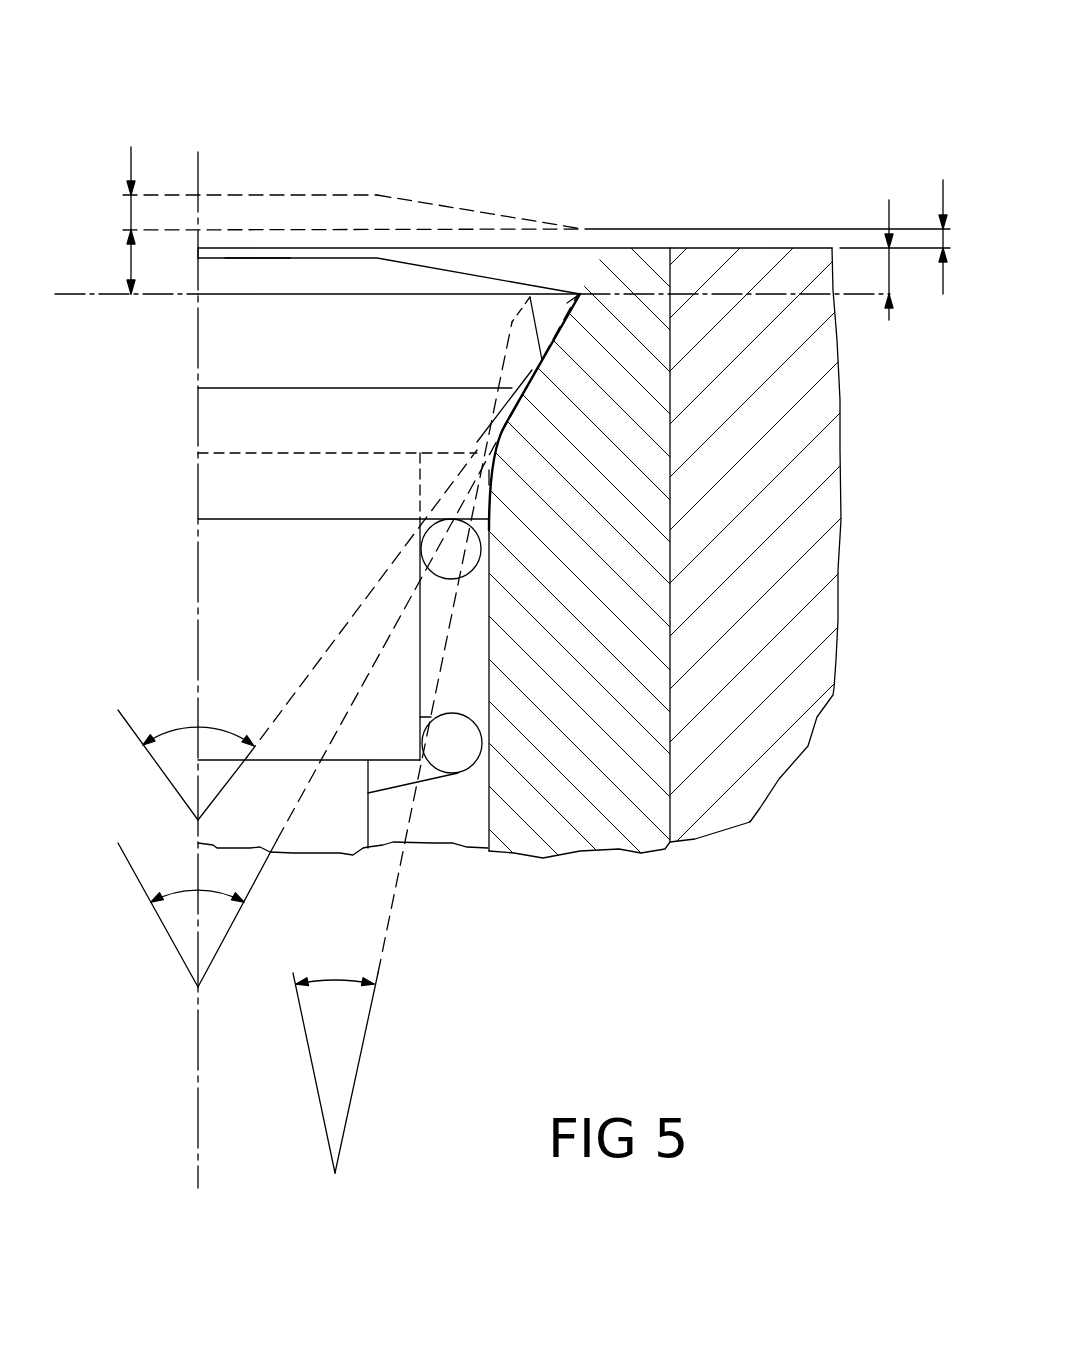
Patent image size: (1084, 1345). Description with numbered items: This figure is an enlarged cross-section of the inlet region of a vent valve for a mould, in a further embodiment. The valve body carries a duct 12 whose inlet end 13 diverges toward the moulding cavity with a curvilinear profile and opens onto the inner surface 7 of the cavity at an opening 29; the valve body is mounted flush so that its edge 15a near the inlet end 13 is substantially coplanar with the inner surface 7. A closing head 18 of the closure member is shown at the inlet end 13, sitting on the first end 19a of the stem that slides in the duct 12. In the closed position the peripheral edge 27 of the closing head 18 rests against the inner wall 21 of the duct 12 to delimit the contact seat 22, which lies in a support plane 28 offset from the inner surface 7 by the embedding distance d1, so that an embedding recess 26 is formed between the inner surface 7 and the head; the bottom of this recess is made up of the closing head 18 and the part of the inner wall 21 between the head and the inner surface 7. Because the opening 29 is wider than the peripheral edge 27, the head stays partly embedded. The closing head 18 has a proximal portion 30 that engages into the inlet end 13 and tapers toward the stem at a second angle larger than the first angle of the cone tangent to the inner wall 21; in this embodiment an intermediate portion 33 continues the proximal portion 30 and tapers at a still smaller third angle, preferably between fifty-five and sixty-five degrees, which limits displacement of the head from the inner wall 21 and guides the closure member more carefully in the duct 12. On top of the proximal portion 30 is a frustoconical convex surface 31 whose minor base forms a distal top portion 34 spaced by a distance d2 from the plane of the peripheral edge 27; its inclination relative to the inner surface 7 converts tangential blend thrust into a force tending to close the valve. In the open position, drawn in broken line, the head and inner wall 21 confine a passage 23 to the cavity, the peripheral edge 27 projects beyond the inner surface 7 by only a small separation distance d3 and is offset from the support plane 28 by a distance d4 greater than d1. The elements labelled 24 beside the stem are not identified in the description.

The inner surface 7 is at (815, 248).
The duct 12 is at (605, 848).
The inlet end 13 is at (514, 510).
The edge 15a is at (668, 229).
The closing head 18 is at (299, 195).
The first end 19a is at (253, 585).
The inner wall 21 is at (515, 395).
The contact seat 22 is at (567, 303).
The passage 23 is at (580, 290).
The sealing rings 24 is at (463, 755).
The embedding recess 26 is at (580, 294).
The peripheral edge 27 is at (353, 230).
The support plane 28 is at (77, 295).
The opening 29 is at (658, 248).
The proximal portion 30 is at (530, 297).
The convex surface 31 is at (405, 197).
The intermediate portion 33 is at (490, 477).
The distal or top portion 34 is at (230, 193).
The embedding distance d1 is at (890, 265).
The predetermined distance d2 is at (131, 210).
The separation distance d3 is at (943, 230).
The distance d4 is at (131, 263).